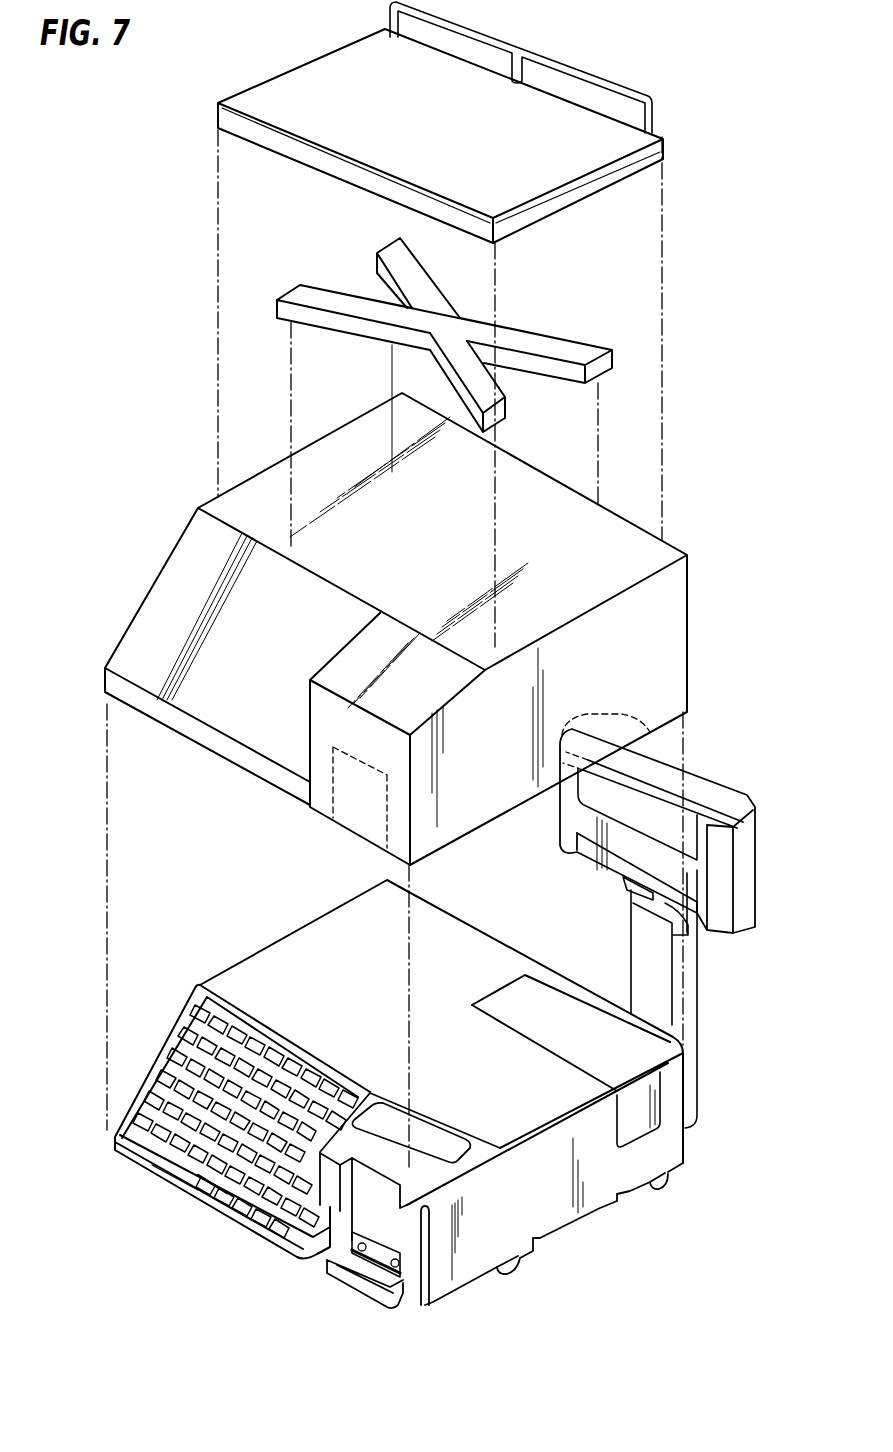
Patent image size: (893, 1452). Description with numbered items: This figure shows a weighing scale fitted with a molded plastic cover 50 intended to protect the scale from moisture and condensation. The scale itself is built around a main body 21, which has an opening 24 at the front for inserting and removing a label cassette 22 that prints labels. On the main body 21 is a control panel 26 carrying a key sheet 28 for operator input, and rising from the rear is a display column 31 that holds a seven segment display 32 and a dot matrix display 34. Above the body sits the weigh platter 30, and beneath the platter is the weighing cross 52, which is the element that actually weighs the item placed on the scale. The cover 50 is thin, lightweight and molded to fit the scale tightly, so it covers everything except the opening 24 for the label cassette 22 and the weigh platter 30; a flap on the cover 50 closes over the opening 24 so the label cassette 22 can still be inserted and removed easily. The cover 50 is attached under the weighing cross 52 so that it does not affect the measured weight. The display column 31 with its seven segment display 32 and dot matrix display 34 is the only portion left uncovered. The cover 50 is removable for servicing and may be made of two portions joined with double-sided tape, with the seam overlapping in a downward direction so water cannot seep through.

The main body 21 is at (550, 1208).
The label cassette 22 is at (343, 1288).
The opening 24 is at (407, 1267).
The control panel 26 is at (160, 1035).
The key sheet 28 is at (180, 1148).
The weigh platter 30 is at (303, 80).
The display column 31 is at (703, 1003).
The seven segment display 32 is at (585, 843).
The dot matrix display 34 is at (667, 833).
The cover 50 is at (688, 628).
The weighing cross 52 is at (572, 340).